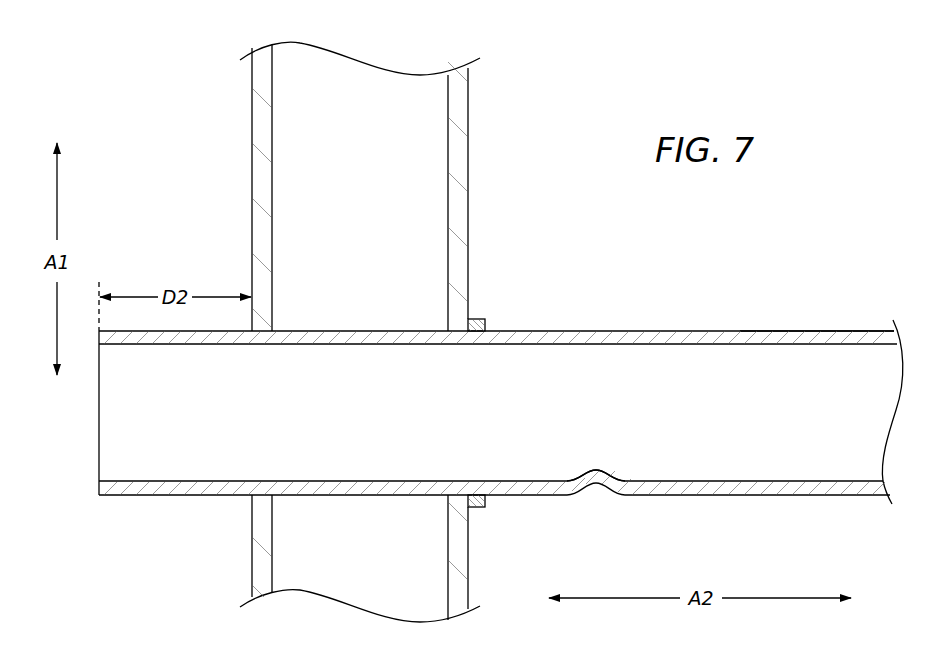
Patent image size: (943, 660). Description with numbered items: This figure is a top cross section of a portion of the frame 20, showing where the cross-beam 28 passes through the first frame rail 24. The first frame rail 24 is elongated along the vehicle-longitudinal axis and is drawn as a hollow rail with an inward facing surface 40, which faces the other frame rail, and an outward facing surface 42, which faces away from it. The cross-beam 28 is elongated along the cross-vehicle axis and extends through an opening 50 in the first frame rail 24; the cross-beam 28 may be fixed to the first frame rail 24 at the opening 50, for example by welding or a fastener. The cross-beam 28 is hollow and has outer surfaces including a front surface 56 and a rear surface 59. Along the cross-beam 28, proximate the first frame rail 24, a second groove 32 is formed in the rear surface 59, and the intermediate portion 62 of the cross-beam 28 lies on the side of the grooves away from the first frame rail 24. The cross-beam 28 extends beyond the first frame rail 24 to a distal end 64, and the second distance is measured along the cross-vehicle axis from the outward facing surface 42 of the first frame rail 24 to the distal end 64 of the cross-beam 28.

The frame 20 is at (141, 125).
The first frame rail 24 is at (470, 148).
The cross-beam 28 is at (552, 330).
The second groove 32 is at (597, 486).
The inward facing surface 40 is at (470, 214).
The outward facing surface 42 is at (250, 222).
The opening 50 is at (488, 330).
The front surface 56 is at (658, 330).
The rear surface 59 is at (823, 497).
The intermediate portion 62 is at (777, 330).
The distal end 64 is at (98, 457).